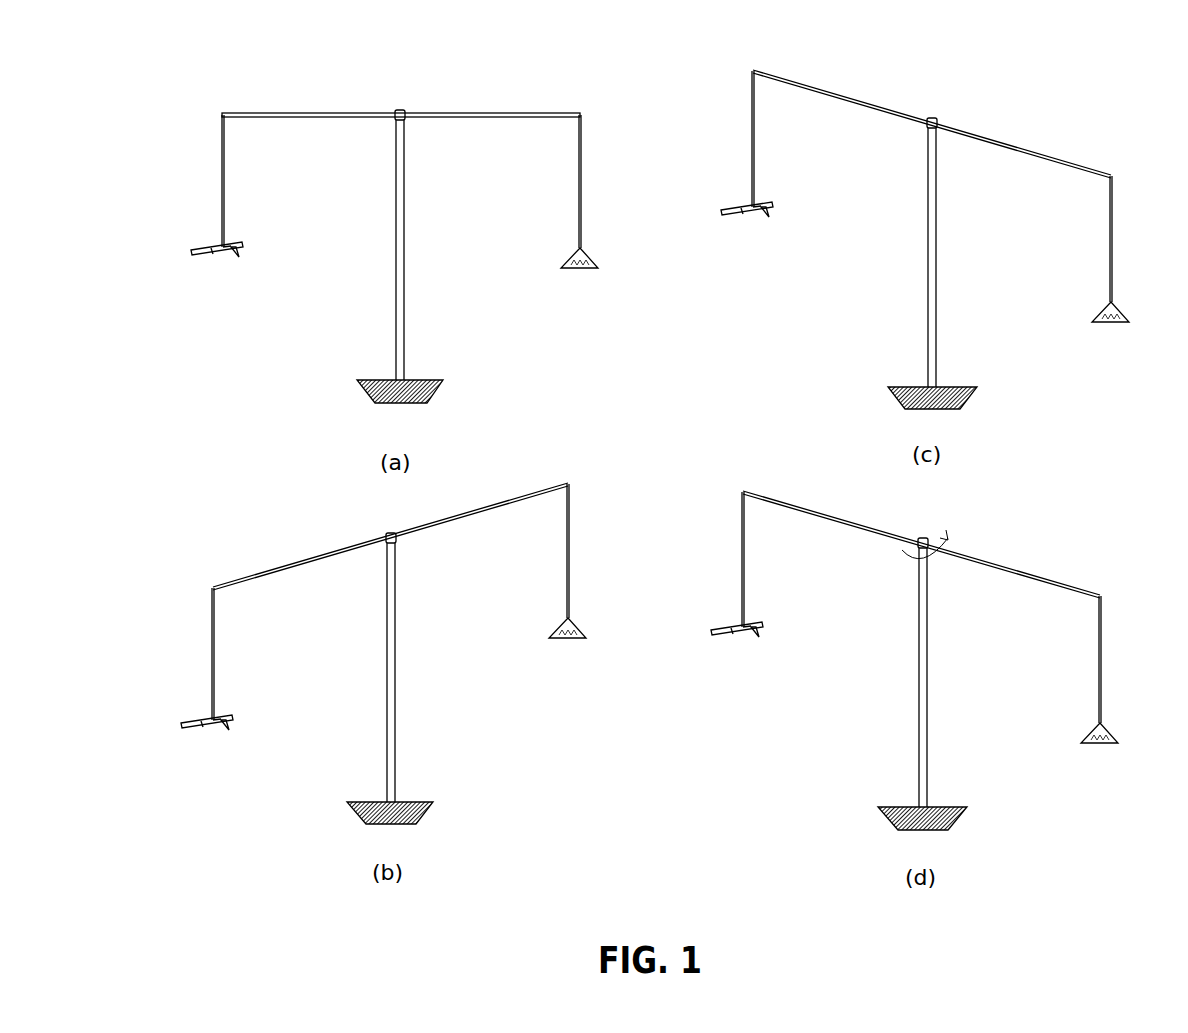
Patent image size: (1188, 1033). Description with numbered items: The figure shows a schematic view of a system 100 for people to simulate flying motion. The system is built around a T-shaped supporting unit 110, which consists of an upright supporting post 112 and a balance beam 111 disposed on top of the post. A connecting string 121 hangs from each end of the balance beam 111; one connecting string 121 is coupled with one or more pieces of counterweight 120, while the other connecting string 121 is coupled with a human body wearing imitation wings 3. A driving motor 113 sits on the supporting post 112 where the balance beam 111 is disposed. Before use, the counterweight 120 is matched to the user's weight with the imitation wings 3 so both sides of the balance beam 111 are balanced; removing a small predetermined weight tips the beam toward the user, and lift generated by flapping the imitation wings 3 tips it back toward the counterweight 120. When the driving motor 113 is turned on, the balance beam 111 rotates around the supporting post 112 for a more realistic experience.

The system for people to simulate flying motion 100 is at (1030, 122).
The T-shaped supporting unit 110 is at (407, 330).
The balance beam 111 is at (287, 115).
The supporting post 112 is at (405, 252).
The driving motor 113 is at (406, 112).
The counterweight 120 is at (592, 258).
The connecting string 121 is at (582, 160).
The imitation wings 3 is at (236, 258).